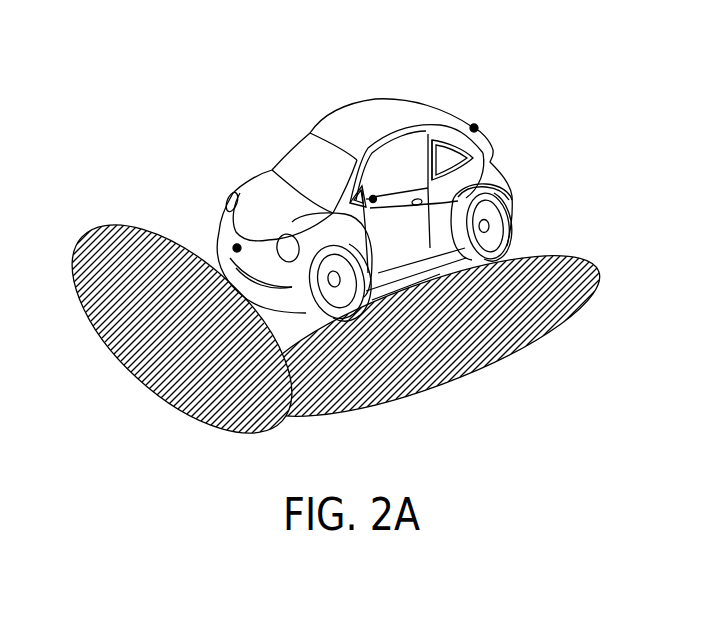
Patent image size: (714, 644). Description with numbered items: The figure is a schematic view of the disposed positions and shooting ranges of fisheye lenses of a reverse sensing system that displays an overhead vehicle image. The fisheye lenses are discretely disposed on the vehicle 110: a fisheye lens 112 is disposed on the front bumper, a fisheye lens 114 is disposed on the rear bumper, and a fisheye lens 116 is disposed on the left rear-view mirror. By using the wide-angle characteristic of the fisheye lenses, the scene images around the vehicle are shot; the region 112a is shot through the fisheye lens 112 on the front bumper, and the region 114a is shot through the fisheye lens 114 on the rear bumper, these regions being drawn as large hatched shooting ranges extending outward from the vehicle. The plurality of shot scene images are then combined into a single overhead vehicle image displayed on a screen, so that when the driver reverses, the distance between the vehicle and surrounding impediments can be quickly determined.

The vehicle 110 is at (358, 112).
The fisheye lens 112 is at (235, 248).
The region 112a is at (156, 382).
The fisheye lens 114 is at (490, 203).
The region 114a is at (481, 372).
The fisheye lens 116 is at (478, 127).